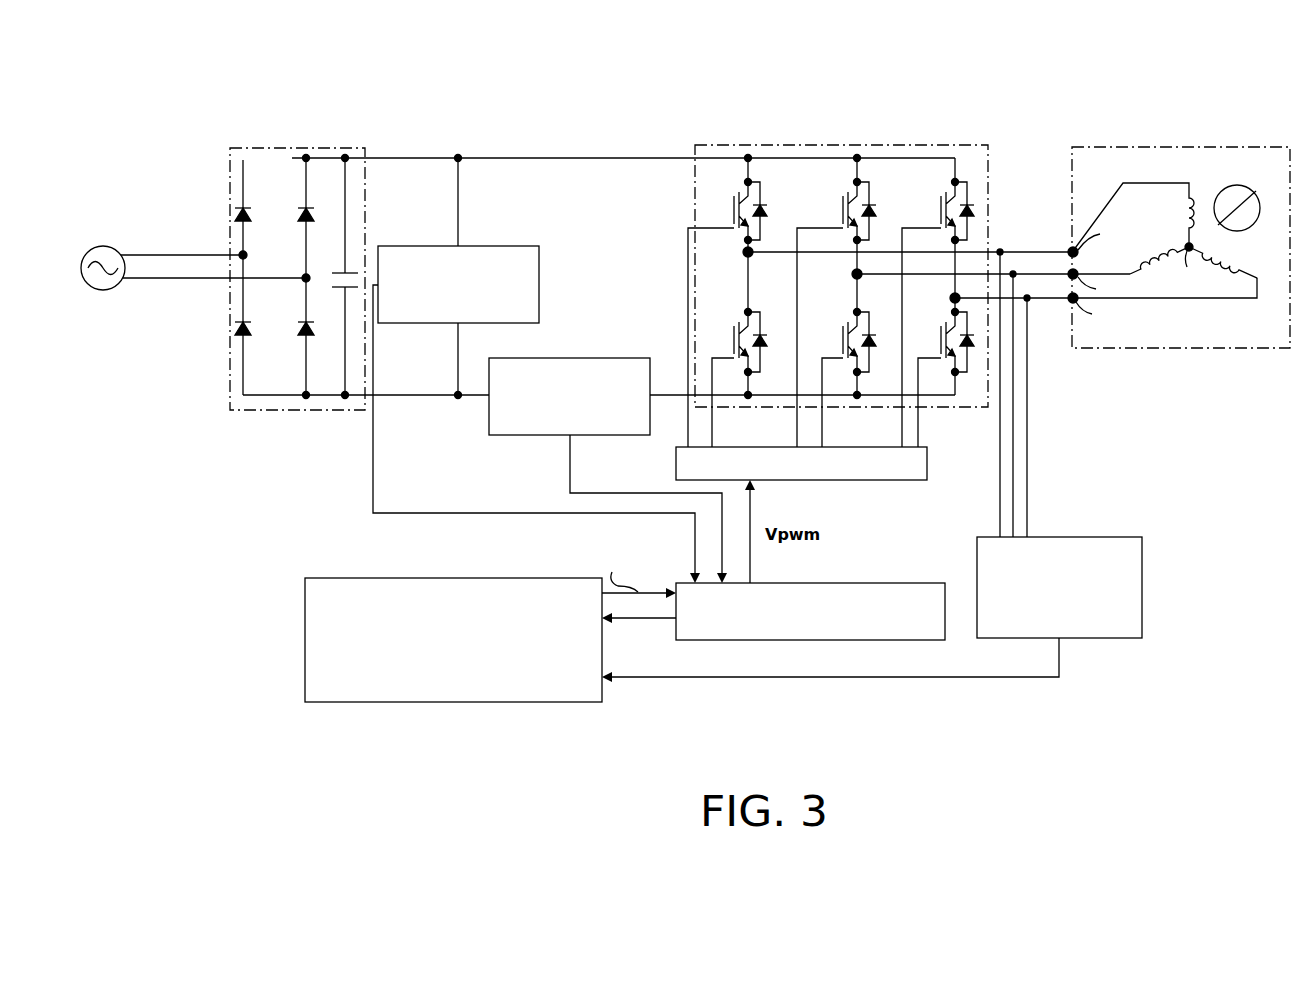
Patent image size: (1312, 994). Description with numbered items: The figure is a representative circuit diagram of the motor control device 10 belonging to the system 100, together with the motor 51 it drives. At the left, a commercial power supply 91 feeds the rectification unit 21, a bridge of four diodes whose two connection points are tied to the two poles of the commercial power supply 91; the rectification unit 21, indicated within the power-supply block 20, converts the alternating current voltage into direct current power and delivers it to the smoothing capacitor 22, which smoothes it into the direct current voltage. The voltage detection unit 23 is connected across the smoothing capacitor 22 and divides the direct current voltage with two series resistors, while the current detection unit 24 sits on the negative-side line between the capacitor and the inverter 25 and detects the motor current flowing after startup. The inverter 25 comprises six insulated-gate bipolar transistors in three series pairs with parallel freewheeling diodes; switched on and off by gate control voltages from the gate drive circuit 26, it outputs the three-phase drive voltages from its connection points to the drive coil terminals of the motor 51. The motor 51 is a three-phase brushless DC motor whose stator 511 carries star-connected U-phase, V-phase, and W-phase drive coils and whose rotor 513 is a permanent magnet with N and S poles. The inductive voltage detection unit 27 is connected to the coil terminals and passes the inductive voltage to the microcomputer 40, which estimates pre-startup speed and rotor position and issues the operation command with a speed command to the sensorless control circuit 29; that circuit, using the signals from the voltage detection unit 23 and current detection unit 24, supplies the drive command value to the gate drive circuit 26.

The system 100 is at (1248, 82).
The motor control device 10 is at (1045, 129).
The power supply circuit 20 is at (238, 146).
The rectification unit 21 is at (595, 250).
The smoothing capacitor 22 is at (336, 268).
The voltage detection unit 23 is at (525, 246).
The current detection unit 24 is at (640, 358).
The inverter 25 is at (886, 145).
The gate drive circuit 26 is at (895, 480).
The inductive voltage detection unit 27 is at (1135, 640).
The sensorless control circuit 29 is at (900, 583).
The microcomputer 40 is at (305, 597).
The motor 51 is at (1169, 218).
The stator 511 is at (1165, 223).
The rotor 513 is at (1252, 199).
The commercial power supply 91 is at (100, 248).